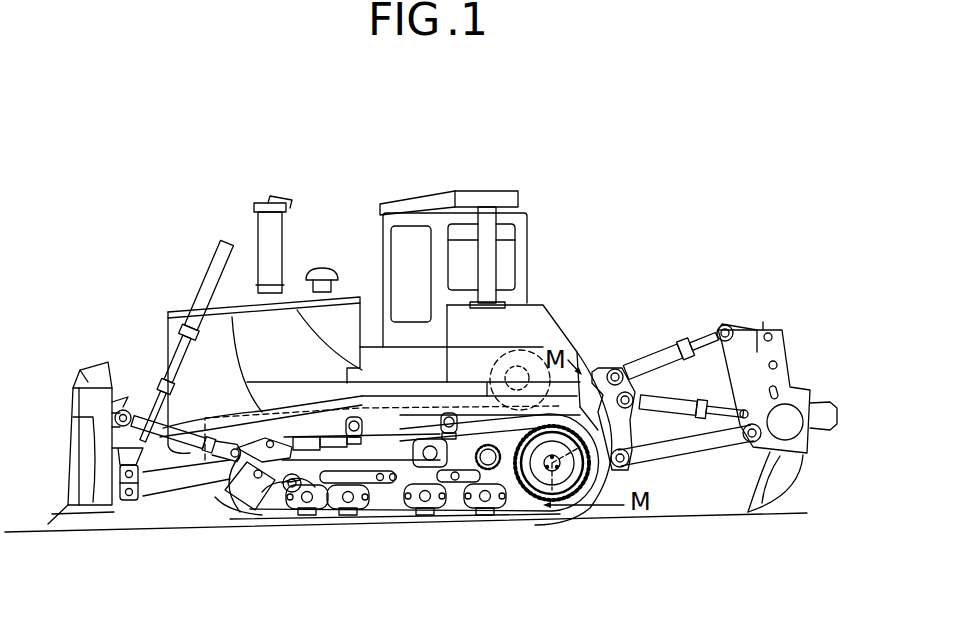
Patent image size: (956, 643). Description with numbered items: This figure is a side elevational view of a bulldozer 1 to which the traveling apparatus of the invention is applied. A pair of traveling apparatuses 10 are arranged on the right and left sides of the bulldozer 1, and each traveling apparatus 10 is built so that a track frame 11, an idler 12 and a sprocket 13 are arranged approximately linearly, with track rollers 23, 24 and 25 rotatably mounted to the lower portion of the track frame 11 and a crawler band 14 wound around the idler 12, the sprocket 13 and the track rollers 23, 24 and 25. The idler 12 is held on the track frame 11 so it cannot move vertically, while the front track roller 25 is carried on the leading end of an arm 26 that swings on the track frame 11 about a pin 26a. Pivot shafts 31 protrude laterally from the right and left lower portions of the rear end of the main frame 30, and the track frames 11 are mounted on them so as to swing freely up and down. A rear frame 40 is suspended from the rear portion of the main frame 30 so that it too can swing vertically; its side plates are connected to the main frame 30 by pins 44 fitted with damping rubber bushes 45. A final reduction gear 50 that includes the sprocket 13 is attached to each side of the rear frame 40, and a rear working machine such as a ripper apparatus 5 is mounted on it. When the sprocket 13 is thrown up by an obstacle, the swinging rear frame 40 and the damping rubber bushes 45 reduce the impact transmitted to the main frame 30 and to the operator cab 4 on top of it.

The bulldozer 1 is at (104, 215).
The operator cab 4 is at (529, 222).
The ripper apparatus 5 is at (721, 308).
The traveling apparatus 10 is at (222, 420).
The track frame 11 is at (392, 433).
The idler 12 is at (225, 515).
The sprocket 13 is at (547, 522).
The crawler band 14 is at (217, 500).
The track roller 23 is at (327, 513).
The track roller 24 is at (378, 515).
The track roller 25 is at (315, 507).
The arm 26 is at (290, 500).
The pin 26a is at (290, 490).
The main frame 30 is at (312, 410).
The pivot shaft 31 is at (492, 442).
The rear frame 40 is at (602, 370).
The pin 44 is at (520, 392).
The damping rubber bush 45 is at (512, 385).
The final reduction gear 50 is at (610, 478).